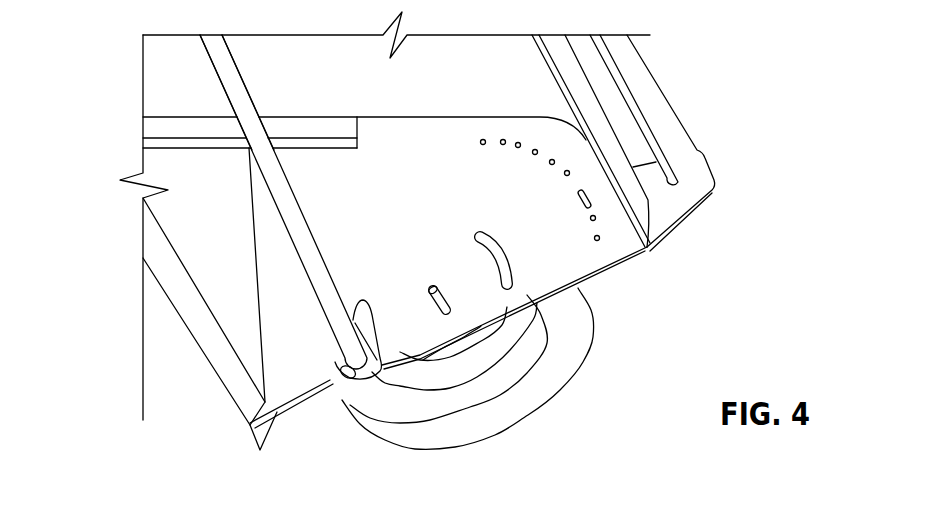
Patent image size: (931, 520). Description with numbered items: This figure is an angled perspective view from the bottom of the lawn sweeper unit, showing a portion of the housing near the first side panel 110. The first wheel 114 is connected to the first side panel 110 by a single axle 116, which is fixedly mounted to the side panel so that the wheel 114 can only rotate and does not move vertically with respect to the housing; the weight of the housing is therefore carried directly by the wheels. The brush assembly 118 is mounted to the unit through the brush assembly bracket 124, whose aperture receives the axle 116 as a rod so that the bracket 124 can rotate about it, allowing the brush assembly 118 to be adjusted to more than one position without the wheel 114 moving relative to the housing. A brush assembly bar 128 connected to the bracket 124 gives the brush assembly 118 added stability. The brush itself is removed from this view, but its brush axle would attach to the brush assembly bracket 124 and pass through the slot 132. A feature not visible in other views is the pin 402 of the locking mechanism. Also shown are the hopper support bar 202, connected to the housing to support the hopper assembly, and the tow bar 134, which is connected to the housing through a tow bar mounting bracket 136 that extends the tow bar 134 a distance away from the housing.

The first side panel 110 is at (397, 340).
The first wheel 114 is at (572, 378).
The axle 116 is at (432, 283).
The brush assembly 118 is at (290, 192).
The brush assembly bracket 124 is at (337, 380).
The brush assembly bar 128 is at (242, 100).
The slot 132 is at (492, 230).
The tow bar 134 is at (650, 105).
The tow bar mounting bracket 136 is at (665, 202).
The hopper support bar 202 is at (345, 132).
The pin 402 is at (580, 207).